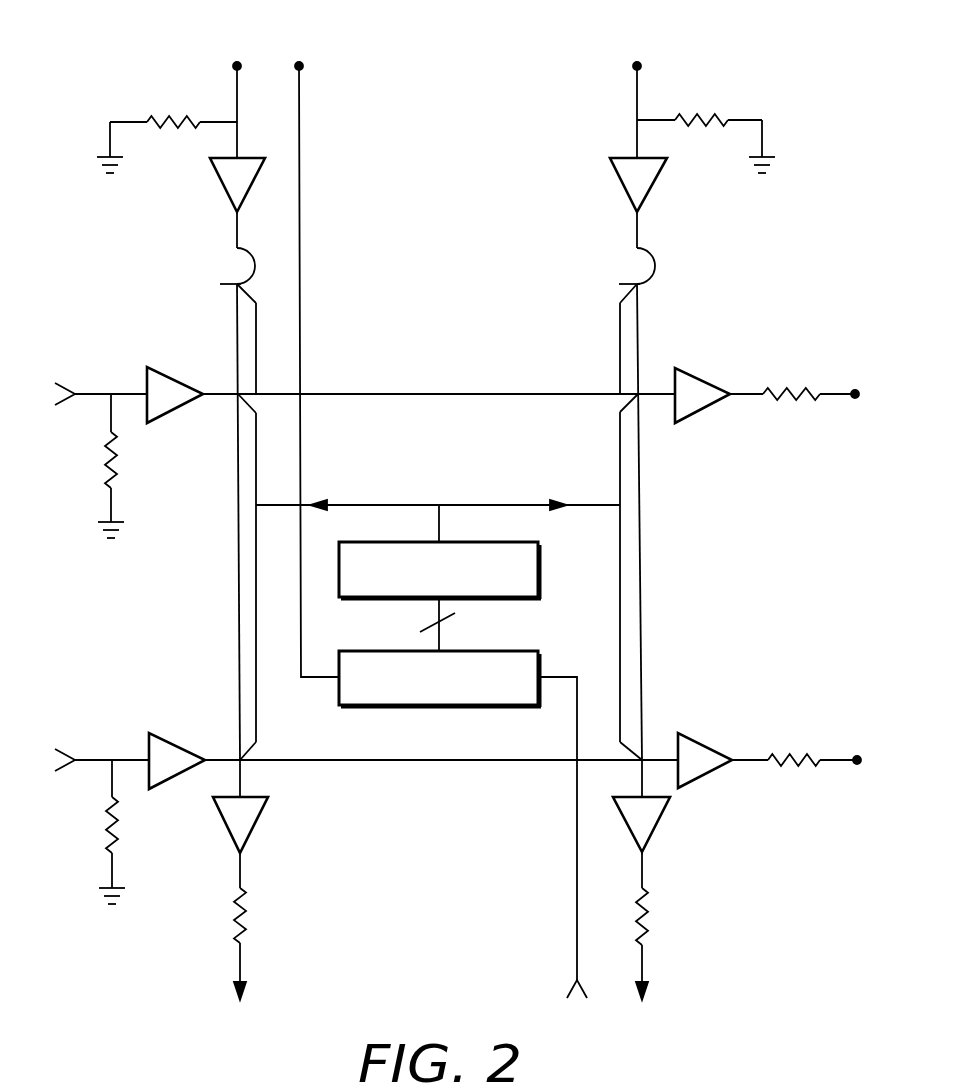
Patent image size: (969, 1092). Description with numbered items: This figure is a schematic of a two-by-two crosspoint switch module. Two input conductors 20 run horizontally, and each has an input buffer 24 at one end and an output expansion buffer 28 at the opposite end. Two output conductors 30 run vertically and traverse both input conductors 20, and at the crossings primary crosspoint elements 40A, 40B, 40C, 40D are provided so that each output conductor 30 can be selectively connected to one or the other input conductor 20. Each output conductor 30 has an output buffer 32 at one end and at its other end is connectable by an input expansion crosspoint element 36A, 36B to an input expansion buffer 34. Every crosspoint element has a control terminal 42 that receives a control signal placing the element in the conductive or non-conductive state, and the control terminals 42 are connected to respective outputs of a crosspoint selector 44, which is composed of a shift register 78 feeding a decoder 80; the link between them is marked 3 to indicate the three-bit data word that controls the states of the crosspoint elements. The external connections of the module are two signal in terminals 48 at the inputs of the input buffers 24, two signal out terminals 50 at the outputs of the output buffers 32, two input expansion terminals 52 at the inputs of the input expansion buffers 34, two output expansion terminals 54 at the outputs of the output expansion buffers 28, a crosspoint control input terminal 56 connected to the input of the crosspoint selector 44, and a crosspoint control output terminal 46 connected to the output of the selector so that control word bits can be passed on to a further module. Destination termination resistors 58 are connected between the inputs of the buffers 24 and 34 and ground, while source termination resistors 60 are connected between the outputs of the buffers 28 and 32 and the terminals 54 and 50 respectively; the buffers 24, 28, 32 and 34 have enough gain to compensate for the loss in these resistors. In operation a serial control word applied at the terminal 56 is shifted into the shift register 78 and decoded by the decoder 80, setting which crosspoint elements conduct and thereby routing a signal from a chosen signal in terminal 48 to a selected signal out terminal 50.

The input conductor 20 is at (460, 393).
The input buffer 24 is at (172, 413).
The output expansion buffer 28 is at (708, 410).
The output conductor 30 is at (238, 620).
The output buffer 32 is at (253, 833).
The input expansion buffer 34 is at (223, 188).
The input expansion crosspoint element 36A is at (237, 285).
The input expansion crosspoint element 36B is at (643, 293).
The primary crosspoint element 40A is at (237, 394).
The primary crosspoint element 40B is at (639, 393).
The primary crosspoint element 40C is at (238, 762).
The primary crosspoint element 40D is at (643, 760).
The control terminal 42 is at (253, 297).
The crosspoint selector 44 is at (520, 484).
The crosspoint control output terminal 46 is at (302, 66).
The signal in terminal 48 is at (80, 394).
The signal out terminal 50 is at (242, 957).
The input expansion terminal 52 is at (237, 60).
The output expansion terminal 54 is at (855, 398).
The crosspoint control input terminal 56 is at (575, 963).
The destination termination resistor 58 is at (707, 112).
The source termination resistor 60 is at (787, 388).
The shift register 78 is at (540, 665).
The decoder 80 is at (540, 580).
The three-bit data word 3 is at (450, 624).